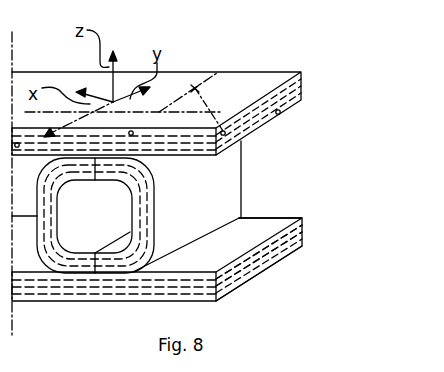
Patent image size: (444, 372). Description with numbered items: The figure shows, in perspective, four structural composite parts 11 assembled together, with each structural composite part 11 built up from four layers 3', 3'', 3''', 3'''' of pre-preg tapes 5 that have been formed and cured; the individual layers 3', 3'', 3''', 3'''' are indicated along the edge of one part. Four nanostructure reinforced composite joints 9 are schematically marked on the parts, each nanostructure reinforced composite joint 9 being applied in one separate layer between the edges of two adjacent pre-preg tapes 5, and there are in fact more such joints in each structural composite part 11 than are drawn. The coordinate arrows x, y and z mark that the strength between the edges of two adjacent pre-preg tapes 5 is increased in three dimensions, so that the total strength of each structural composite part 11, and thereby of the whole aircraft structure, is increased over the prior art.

The first layer 3' is at (273, 273).
The second layer 3'' is at (280, 259).
The third layer 3''' is at (285, 247).
The fourth layer 3'''' is at (283, 199).
The pre-preg tape 5 is at (278, 114).
The nanostructure reinforced composite joint 9 is at (15, 143).
The structural composite part 11 is at (310, 90).